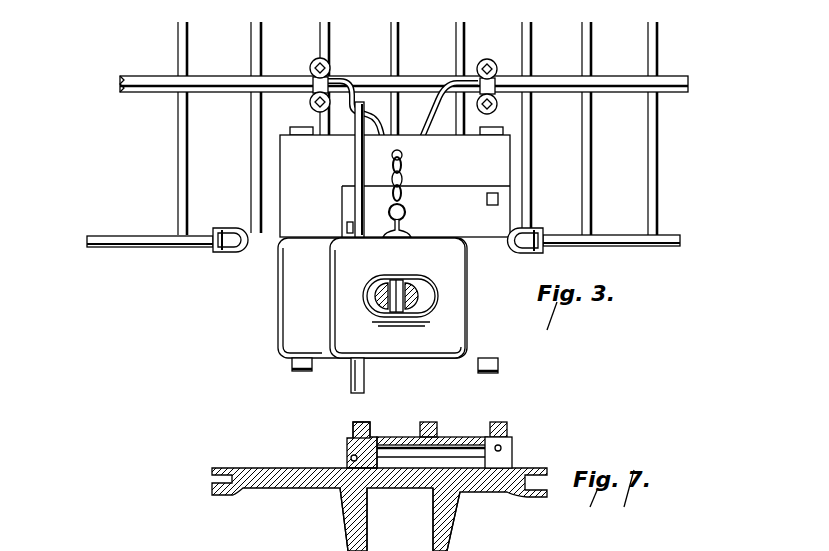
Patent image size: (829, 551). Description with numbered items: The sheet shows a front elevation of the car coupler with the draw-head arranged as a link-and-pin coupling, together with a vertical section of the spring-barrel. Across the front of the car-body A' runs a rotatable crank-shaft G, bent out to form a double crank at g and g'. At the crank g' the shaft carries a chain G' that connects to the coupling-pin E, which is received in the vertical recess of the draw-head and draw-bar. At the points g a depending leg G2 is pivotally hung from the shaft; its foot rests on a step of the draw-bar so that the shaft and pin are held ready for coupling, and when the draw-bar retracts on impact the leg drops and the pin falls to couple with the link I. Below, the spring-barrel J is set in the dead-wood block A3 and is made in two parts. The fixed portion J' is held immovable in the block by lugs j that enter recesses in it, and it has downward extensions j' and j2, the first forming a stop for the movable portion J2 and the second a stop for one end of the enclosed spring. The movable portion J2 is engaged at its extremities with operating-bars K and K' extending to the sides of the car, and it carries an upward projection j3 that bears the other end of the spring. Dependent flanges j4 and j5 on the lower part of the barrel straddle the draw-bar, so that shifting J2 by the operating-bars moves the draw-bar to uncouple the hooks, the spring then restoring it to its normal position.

In FIG. 3, the crank-shaft G is at (404, 77).
In FIG. 3, the crank g is at (403, 107).
In FIG. 3, the crank g' is at (439, 123).
In FIG. 3, the chain G' is at (387, 175).
In FIG. 3, the depending leg G2 is at (347, 169).
In FIG. 3, the car-body A' is at (417, 128).
In FIG. 3, the dead-wood block A3 is at (395, 182).
In FIG. 3, the coupling-pin E is at (403, 220).
In FIG. 3, the link I is at (404, 300).
In FIG. 3, the operating-bar K is at (150, 252).
In FIG. 3, the operating-bar K' is at (611, 250).
In FIG. 3, the movable portion of spring-barrel J2 is at (378, 252).
In FIG. 7, the movable portion of spring-barrel J2 is at (379, 500).
In FIG. 7, the spring-barrel J is at (346, 445).
In FIG. 7, the downward extension j' is at (344, 460).
In FIG. 7, the fixed portion of spring-barrel J' is at (432, 432).
In FIG. 7, the lug j is at (430, 422).
In FIG. 7, the downward extension j2 is at (505, 452).
In FIG. 7, the upward projection j3 is at (431, 456).
In FIG. 7, the dependent flange j4 is at (361, 519).
In FIG. 7, the dependent flange j5 is at (452, 519).